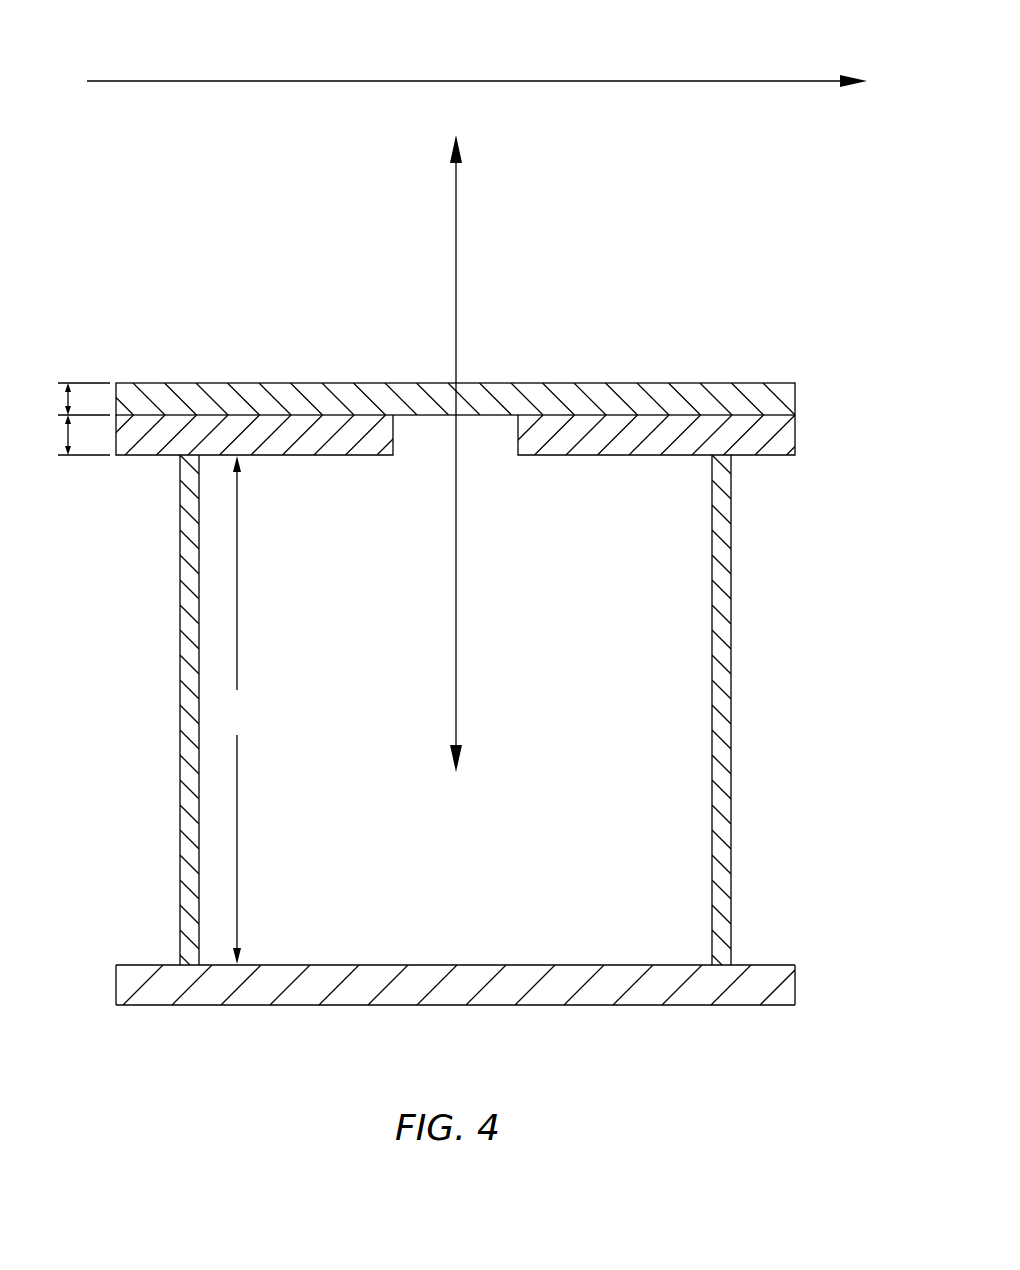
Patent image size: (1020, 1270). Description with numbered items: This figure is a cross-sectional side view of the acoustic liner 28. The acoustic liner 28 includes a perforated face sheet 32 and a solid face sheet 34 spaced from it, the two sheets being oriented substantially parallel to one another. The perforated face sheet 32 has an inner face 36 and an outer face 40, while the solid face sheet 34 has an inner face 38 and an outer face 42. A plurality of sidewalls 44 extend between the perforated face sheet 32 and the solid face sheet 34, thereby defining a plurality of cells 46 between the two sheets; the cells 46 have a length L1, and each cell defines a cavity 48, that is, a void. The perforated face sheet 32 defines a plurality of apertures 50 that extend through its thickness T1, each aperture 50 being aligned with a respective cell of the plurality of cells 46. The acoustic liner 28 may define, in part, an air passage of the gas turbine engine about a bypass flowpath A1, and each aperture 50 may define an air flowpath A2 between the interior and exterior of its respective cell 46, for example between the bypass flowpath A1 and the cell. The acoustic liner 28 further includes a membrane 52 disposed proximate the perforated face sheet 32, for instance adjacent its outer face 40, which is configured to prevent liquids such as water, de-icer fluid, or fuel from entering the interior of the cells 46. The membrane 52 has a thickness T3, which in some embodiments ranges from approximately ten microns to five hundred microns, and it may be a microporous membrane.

The acoustic liner 28 is at (772, 318).
The perforated face sheet 32 is at (790, 432).
The solid face sheet 34 is at (790, 985).
The inner face 36 is at (668, 457).
The inner face 38 is at (668, 963).
The outer face 40 is at (735, 410).
The outer face 42 is at (737, 1007).
The sidewalls 44 is at (722, 660).
The cells 46 is at (160, 704).
The cavity 48 is at (456, 882).
The apertures 50 is at (484, 460).
The membrane 52 is at (272, 385).
The bypass flowpath A1 is at (673, 81).
The air flowpath A2 is at (456, 208).
The thickness of the perforated face sheet T1 is at (68, 435).
The thickness of the membrane T3 is at (68, 400).
The length of the cells L1 is at (240, 710).